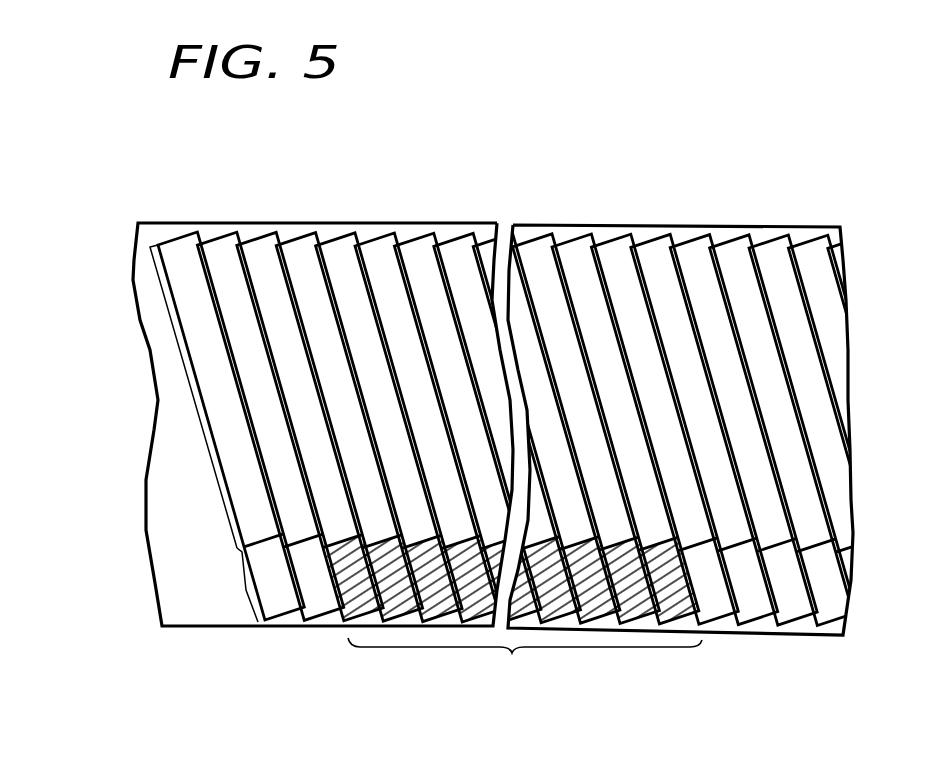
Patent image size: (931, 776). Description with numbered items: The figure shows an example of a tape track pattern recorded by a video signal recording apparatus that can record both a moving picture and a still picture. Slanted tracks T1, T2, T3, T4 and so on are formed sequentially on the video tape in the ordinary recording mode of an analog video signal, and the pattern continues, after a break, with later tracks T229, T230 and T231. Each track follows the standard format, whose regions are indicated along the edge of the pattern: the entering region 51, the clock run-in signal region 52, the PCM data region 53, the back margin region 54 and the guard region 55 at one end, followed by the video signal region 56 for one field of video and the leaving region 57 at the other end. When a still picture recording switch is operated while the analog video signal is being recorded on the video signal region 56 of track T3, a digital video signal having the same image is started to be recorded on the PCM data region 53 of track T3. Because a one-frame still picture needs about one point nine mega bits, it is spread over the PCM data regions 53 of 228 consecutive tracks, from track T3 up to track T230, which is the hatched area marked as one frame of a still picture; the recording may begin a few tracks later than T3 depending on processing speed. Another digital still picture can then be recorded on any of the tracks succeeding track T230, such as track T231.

The track T1 is at (177, 245).
The track T2 is at (218, 245).
The track T3 is at (257, 245).
The track T4 is at (302, 247).
The track T229 is at (533, 257).
The track T230 is at (573, 250).
The track T231 is at (610, 247).
The entering region 51 is at (218, 616).
The clock run-in signal region 52 is at (218, 616).
The PCM data region 53 is at (218, 616).
The back margin region 54 is at (218, 616).
The guard region 55 is at (245, 590).
The video signal region 56 is at (149, 396).
The leaving region 57 is at (200, 428).
The tracks 228 is at (546, 678).